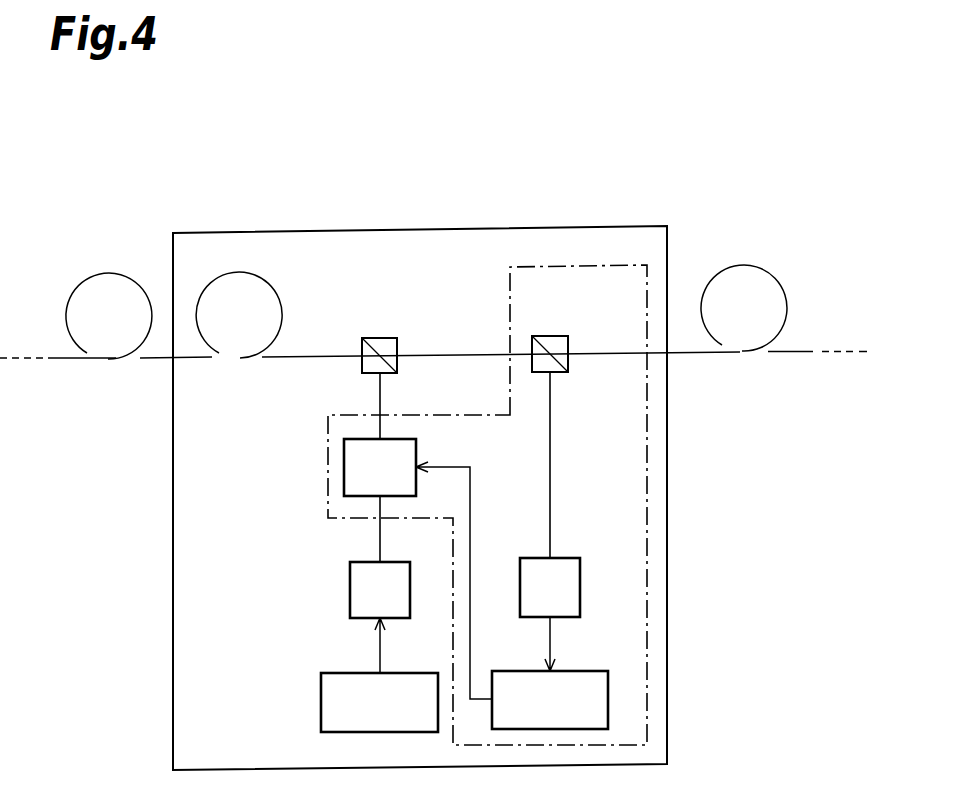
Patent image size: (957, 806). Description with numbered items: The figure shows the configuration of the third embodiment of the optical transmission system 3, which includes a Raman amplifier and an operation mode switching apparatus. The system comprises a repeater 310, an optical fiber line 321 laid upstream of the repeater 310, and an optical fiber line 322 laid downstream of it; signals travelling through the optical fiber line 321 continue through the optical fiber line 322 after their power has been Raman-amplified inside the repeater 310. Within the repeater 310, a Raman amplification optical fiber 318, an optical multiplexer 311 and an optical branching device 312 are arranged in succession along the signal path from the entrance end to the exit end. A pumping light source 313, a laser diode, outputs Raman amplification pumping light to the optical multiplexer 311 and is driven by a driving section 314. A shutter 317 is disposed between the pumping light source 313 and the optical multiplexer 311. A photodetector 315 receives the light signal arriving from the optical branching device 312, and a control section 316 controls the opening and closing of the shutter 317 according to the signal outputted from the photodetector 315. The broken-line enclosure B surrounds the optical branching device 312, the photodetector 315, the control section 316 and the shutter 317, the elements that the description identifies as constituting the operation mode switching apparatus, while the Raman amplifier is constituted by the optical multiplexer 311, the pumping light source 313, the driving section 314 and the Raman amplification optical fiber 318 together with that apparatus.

The optical transmission system 3 is at (481, 161).
The repeater 310 is at (536, 228).
The optical multiplexer 311 is at (378, 338).
The optical branching device 312 is at (548, 336).
The pumping light source (LD) 313 is at (350, 590).
The driving section 314 is at (321, 703).
The photodetector (PD) 315 is at (562, 558).
The control section 316 is at (583, 671).
The shutter 317 is at (344, 468).
The Raman amplification optical fiber 318 is at (277, 290).
The optical fiber line 321 is at (108, 273).
The optical fiber line 322 is at (742, 265).
The control block B is at (648, 485).